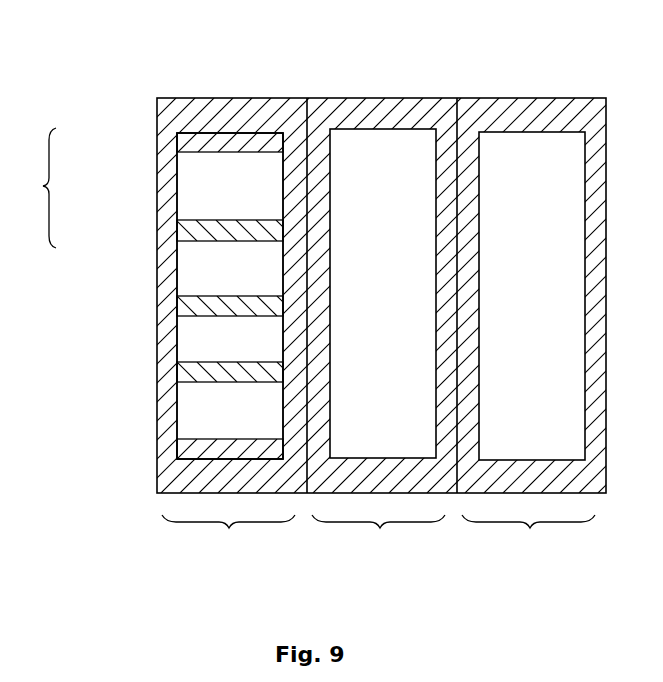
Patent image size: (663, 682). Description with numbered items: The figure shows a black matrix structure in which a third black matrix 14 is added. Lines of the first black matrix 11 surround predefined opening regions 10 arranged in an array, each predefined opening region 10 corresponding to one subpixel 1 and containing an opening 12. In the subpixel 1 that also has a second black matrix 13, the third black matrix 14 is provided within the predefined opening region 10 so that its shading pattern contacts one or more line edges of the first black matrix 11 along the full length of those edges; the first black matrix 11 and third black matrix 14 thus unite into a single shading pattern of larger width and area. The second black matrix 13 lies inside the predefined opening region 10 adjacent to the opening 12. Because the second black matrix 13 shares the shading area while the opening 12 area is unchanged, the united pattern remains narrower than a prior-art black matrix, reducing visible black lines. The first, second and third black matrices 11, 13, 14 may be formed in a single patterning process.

The subpixel 1 is at (378, 543).
The predefined opening region 10 is at (148, 293).
The first black matrix 11 is at (213, 117).
The opening 12 is at (212, 193).
The second black matrix 13 is at (195, 235).
The third black matrix 14 is at (190, 141).